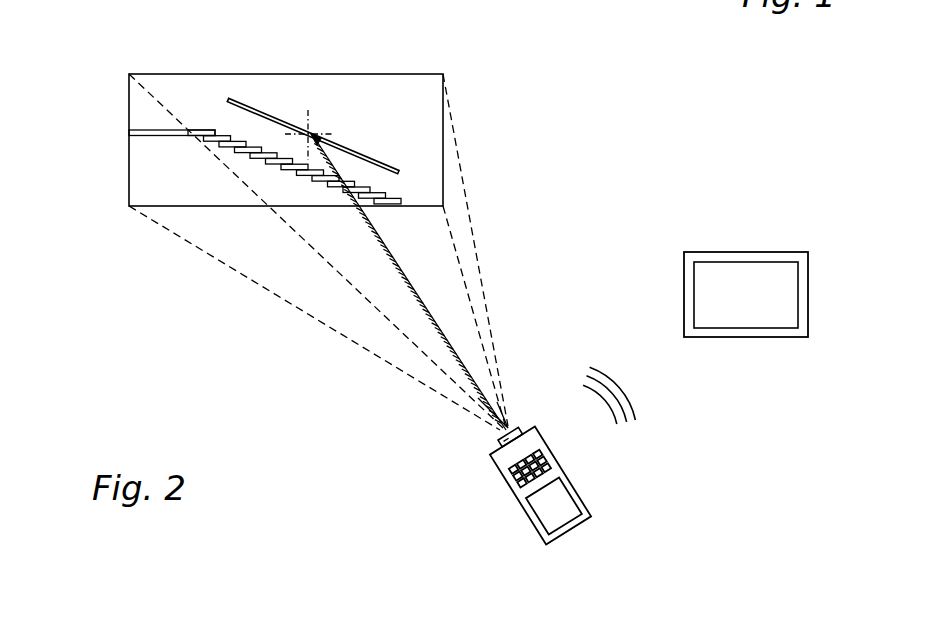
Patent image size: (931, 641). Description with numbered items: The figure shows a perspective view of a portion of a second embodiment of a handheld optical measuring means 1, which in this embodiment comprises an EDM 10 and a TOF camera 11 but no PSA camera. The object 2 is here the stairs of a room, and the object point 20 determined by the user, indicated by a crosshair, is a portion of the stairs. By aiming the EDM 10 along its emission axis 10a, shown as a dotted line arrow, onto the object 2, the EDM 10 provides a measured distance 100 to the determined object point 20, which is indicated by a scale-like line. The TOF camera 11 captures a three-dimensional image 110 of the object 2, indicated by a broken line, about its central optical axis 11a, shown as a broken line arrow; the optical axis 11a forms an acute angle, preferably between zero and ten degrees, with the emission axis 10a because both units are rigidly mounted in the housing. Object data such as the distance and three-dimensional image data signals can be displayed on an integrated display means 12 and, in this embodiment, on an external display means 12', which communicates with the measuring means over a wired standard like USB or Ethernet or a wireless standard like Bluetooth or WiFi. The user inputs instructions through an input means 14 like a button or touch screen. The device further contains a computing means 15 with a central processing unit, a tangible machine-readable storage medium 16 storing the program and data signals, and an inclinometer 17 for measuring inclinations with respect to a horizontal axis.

The handheld optical measuring means 1 is at (580, 260).
The object 2 is at (140, 163).
The EDM 10 is at (464, 482).
The TOF camera 11 is at (500, 446).
The emission axis 10a is at (396, 413).
The measured distance 100 is at (480, 398).
The 3D image 110 is at (318, 320).
The central optical axis 11a is at (450, 346).
The integrated display means 12 is at (512, 505).
The external display means 12' is at (746, 294).
The input means 14 is at (513, 484).
The computing means 15 is at (644, 432).
The tangible machine-readable storage medium 16 is at (644, 432).
The inclinometer 17 is at (582, 457).
The object point 20 is at (311, 134).